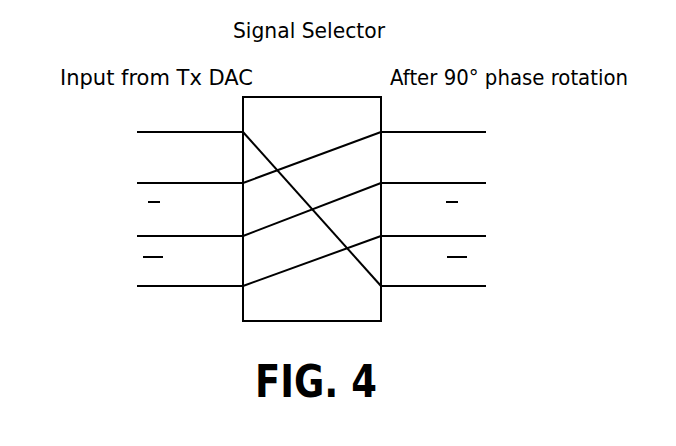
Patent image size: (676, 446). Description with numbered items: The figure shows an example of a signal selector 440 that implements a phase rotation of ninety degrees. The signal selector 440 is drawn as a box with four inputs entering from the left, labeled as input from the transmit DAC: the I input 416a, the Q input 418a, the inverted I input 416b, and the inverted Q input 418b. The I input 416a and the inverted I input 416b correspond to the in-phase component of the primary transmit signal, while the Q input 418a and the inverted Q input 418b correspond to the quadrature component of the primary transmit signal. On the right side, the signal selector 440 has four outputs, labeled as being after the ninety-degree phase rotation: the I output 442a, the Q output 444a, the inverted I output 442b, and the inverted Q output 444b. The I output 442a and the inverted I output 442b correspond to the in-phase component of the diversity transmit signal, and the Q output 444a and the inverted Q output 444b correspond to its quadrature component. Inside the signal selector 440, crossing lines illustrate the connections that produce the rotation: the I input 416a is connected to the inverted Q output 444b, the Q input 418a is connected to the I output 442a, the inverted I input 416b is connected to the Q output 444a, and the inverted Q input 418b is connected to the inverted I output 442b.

The signal selector 440 is at (306, 97).
The I input 416a is at (190, 117).
The Q input 418a is at (190, 168).
The inverted I input 416b is at (190, 219).
The inverted Q input 418b is at (190, 271).
The I output 442a is at (433, 117).
The Q output 444a is at (433, 168).
The inverted I output 442b is at (433, 219).
The inverted Q output 444b is at (433, 271).